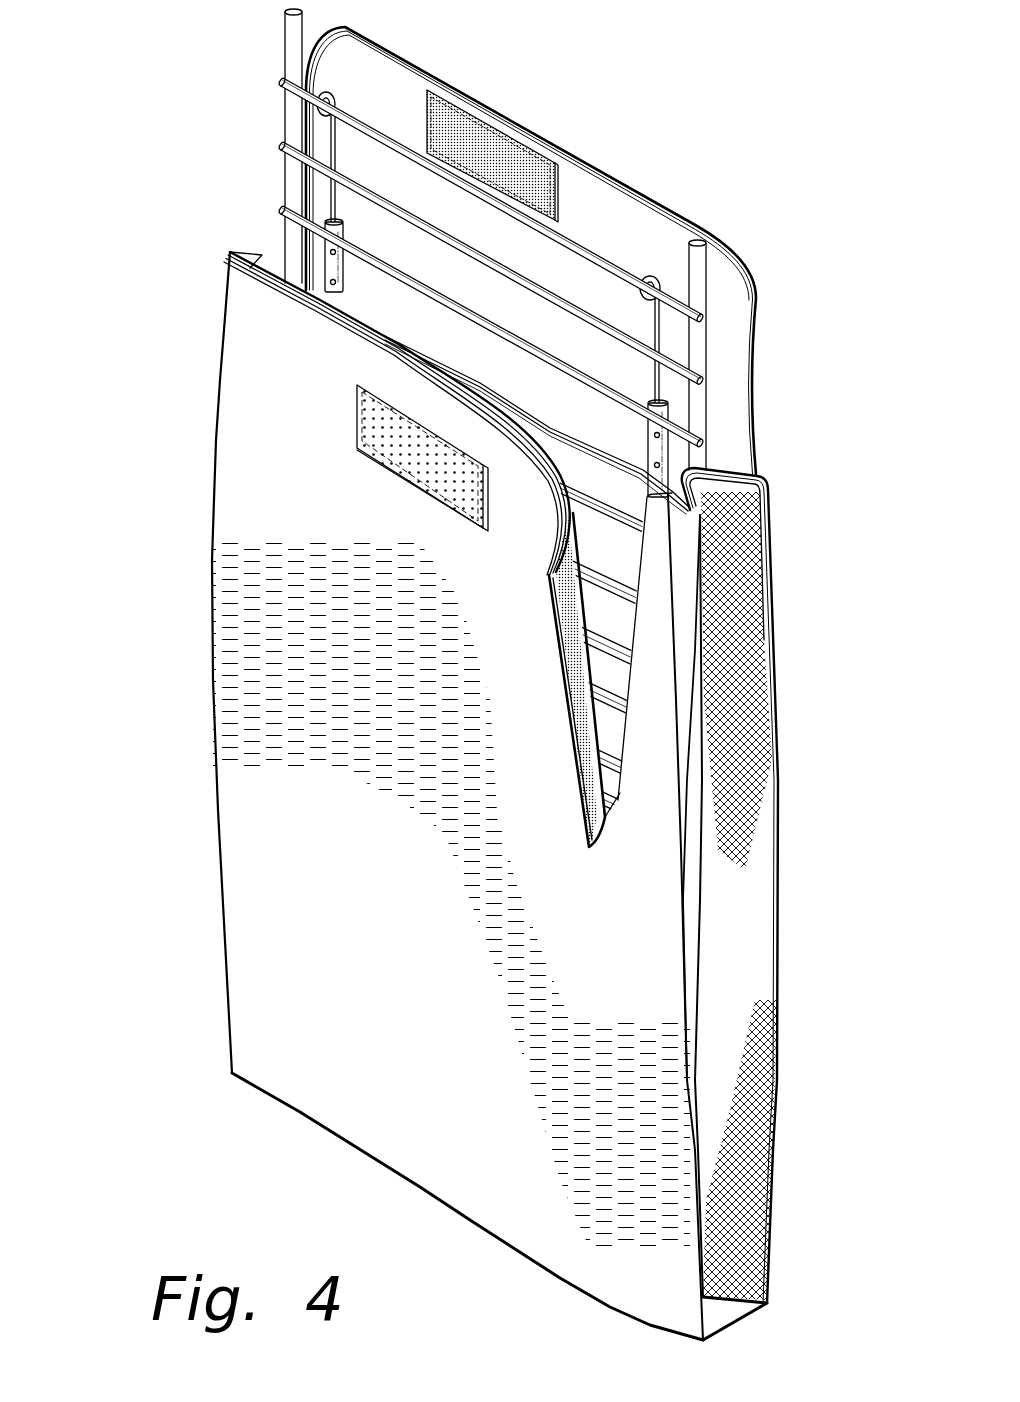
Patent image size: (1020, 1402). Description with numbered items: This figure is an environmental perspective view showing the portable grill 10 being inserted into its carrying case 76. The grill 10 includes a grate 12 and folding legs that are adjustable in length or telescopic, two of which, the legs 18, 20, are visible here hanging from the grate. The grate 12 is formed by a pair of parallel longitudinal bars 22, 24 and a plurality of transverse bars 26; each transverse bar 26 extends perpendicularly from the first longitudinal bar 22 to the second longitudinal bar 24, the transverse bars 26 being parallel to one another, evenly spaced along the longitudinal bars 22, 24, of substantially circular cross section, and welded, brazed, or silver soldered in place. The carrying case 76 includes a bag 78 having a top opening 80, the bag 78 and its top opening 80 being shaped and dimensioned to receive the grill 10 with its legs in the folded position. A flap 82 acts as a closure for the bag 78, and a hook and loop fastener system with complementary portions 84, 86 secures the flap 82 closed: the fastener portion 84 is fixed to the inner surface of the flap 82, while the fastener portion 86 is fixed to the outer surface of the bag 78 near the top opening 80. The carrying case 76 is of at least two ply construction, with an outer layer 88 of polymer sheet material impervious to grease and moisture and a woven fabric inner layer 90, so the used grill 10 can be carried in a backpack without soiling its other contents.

The portable grill 10 is at (713, 417).
The grate 12 is at (640, 240).
The folding leg 18 is at (333, 207).
The folding leg 20 is at (657, 380).
The longitudinal bar 22 is at (290, 37).
The longitudinal bar 24 is at (700, 335).
The transverse bars 26 is at (277, 80).
The carrying case 76 is at (178, 620).
The bag 78 is at (235, 415).
The top opening 80 is at (250, 264).
The flap 82 is at (602, 197).
The fastener portion 84 is at (498, 148).
The fastener portion 86 is at (380, 433).
The outer layer 88 is at (565, 522).
The inner layer 90 is at (575, 530).